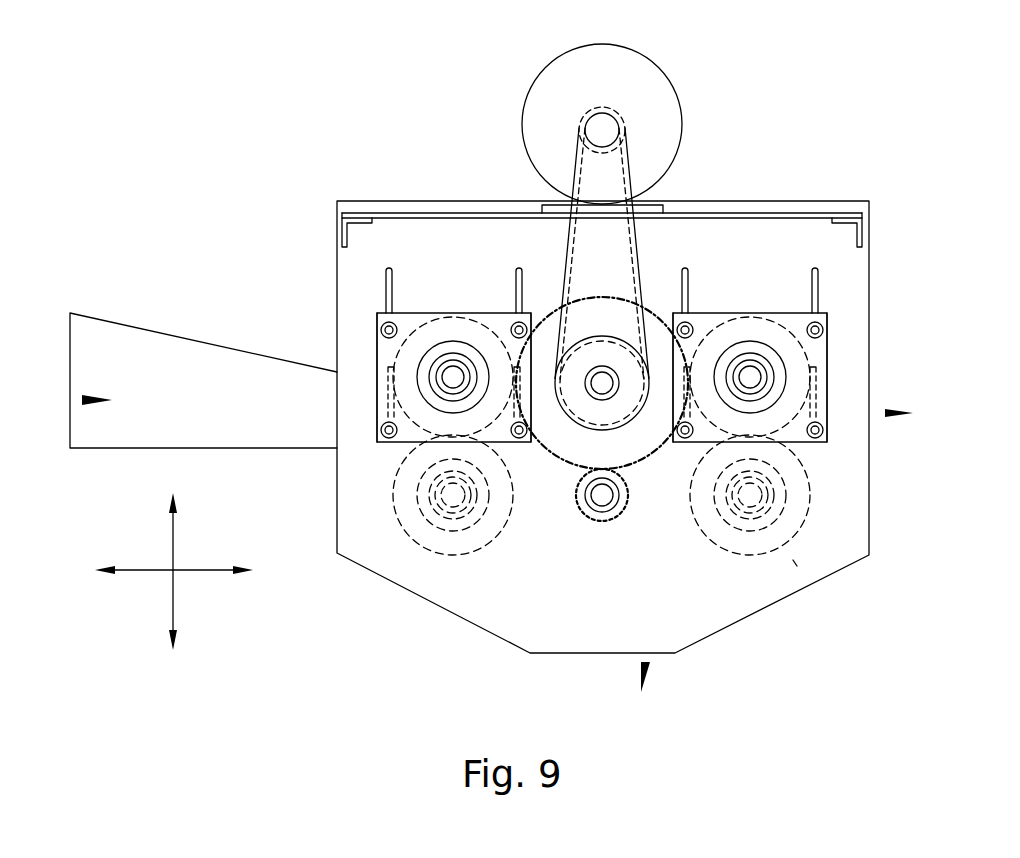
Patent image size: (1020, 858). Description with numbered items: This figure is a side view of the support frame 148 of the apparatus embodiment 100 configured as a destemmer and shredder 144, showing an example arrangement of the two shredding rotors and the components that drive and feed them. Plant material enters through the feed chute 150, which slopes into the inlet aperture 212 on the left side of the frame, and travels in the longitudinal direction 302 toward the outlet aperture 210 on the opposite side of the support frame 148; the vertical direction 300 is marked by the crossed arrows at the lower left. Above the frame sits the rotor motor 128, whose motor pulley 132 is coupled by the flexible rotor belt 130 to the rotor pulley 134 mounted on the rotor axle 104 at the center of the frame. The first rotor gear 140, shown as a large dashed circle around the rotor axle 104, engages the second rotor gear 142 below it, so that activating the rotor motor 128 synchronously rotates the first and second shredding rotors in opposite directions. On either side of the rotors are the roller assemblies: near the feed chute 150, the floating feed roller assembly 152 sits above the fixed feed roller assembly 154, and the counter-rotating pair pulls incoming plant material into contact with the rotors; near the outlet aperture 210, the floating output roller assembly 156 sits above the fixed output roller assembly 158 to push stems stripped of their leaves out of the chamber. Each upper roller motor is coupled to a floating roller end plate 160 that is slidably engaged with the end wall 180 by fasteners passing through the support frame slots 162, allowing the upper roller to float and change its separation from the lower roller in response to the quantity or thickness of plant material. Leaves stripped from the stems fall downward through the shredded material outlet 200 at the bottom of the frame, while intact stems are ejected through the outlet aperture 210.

The apparatus embodiment 100 is at (445, 155).
The rotor axle 104 is at (620, 385).
The rotor motor 128 is at (532, 93).
The rotor belt 130 is at (573, 282).
The motor pulley 132 is at (597, 112).
The rotor pulley 134 is at (570, 343).
The first rotor gear 140 is at (645, 460).
The second rotor gear 142 is at (608, 513).
The destemmer and shredder 144 is at (272, 250).
The support frame 148 is at (735, 212).
The feed chute 150 is at (123, 322).
The floating feed roller assembly 152 is at (420, 292).
The fixed feed roller assembly 154 is at (458, 578).
The floating output roller assembly 156 is at (715, 292).
The fixed output roller assembly 158 is at (735, 578).
The floating roller end plate 160 is at (377, 365).
The support frame slots 162 is at (389, 268).
The end wall 180 is at (793, 560).
The shredded material outlet 200 is at (645, 665).
The outlet aperture 210 is at (885, 413).
The inlet aperture 212 is at (80, 400).
The vertical direction 300 is at (177, 532).
The longitudinal direction 302 is at (190, 572).